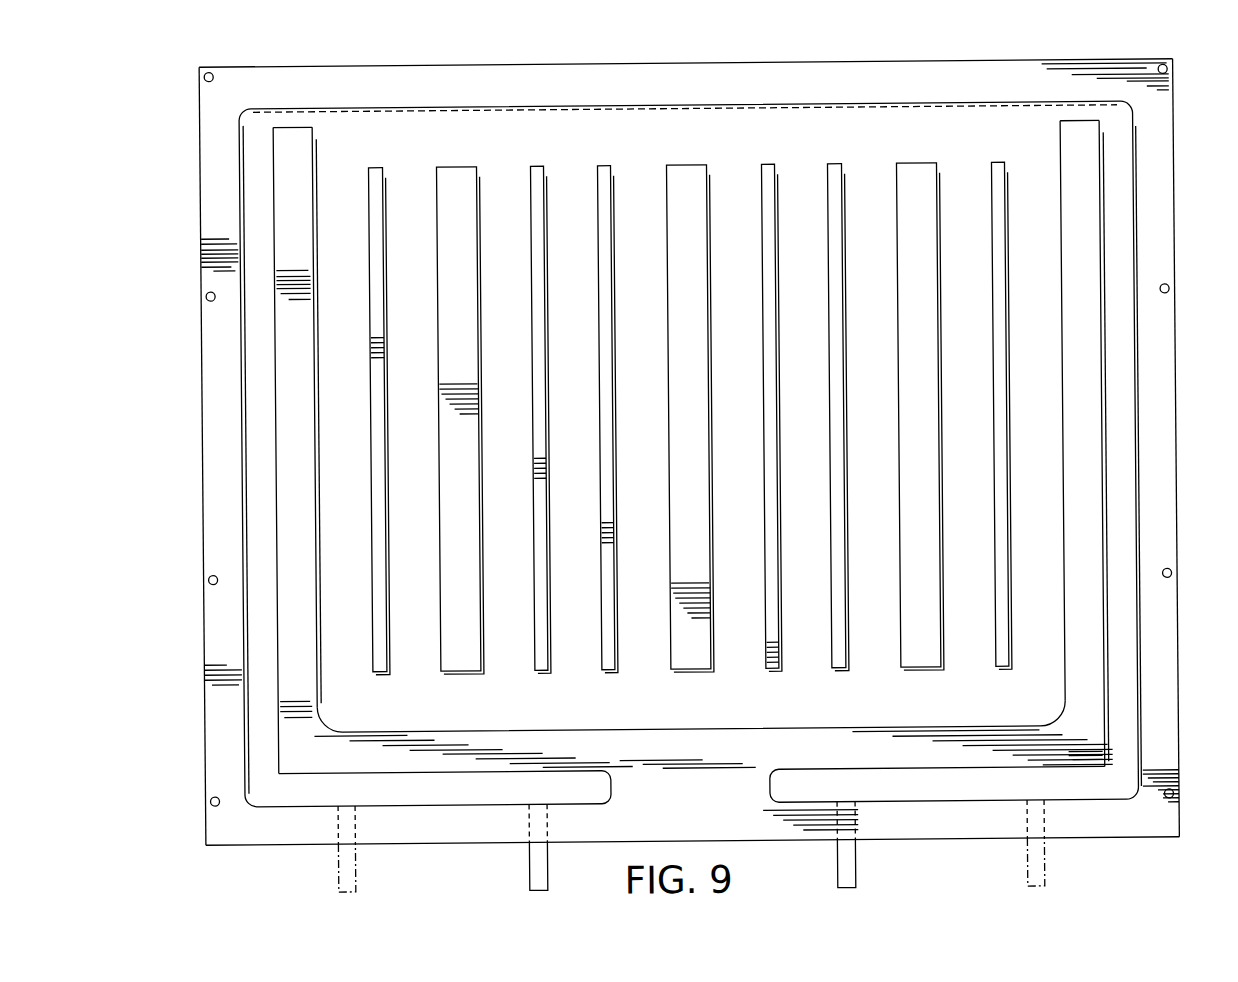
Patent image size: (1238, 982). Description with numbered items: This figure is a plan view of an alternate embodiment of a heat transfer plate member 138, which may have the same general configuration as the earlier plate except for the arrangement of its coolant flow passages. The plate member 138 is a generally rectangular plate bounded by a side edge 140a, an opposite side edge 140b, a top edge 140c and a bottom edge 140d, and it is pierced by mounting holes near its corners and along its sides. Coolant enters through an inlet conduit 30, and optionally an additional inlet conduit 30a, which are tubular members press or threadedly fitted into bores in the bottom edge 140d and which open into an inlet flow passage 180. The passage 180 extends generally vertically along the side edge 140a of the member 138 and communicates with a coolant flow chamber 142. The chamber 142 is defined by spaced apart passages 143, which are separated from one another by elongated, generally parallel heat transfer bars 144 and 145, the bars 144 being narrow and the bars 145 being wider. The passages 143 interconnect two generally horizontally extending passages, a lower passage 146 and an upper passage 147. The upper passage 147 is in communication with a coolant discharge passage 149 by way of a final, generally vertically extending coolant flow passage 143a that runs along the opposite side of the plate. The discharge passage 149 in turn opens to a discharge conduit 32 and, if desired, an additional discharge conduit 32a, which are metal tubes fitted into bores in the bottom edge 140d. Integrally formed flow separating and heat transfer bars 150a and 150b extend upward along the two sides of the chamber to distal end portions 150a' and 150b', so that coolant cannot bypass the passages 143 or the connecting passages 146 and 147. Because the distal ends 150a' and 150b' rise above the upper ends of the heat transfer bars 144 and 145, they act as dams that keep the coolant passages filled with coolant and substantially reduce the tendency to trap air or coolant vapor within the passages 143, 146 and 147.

The plate member 138 is at (685, 463).
The side edge 140a is at (1178, 376).
The left edge of plate 140b is at (202, 374).
The top edge of plate 140c is at (332, 64).
The bottom edge of plate 140d is at (274, 842).
The coolant flow chamber 142 is at (790, 127).
The passages 143 is at (640, 183).
The final coolant flow passage 143a is at (266, 508).
The heat transfer bars 144 is at (383, 670).
The heat transfer bars 145 is at (460, 163).
The horizontally extending passage 146 is at (641, 697).
The horizontally extending passage 147 is at (497, 127).
The coolant discharge passage 149 is at (437, 791).
The inlet flow passage 180 is at (932, 797).
The flow separating and heat transfer bar 150a is at (1149, 434).
The distal end portion 150a' is at (1147, 125).
The flow separating and heat transfer bar 150b is at (226, 447).
The distal end portion 150b' is at (221, 135).
The inlet conduit 30 is at (845, 849).
The inlet conduit 30a is at (1046, 885).
The discharge conduit 32 is at (525, 849).
The discharge conduit 32a is at (353, 884).